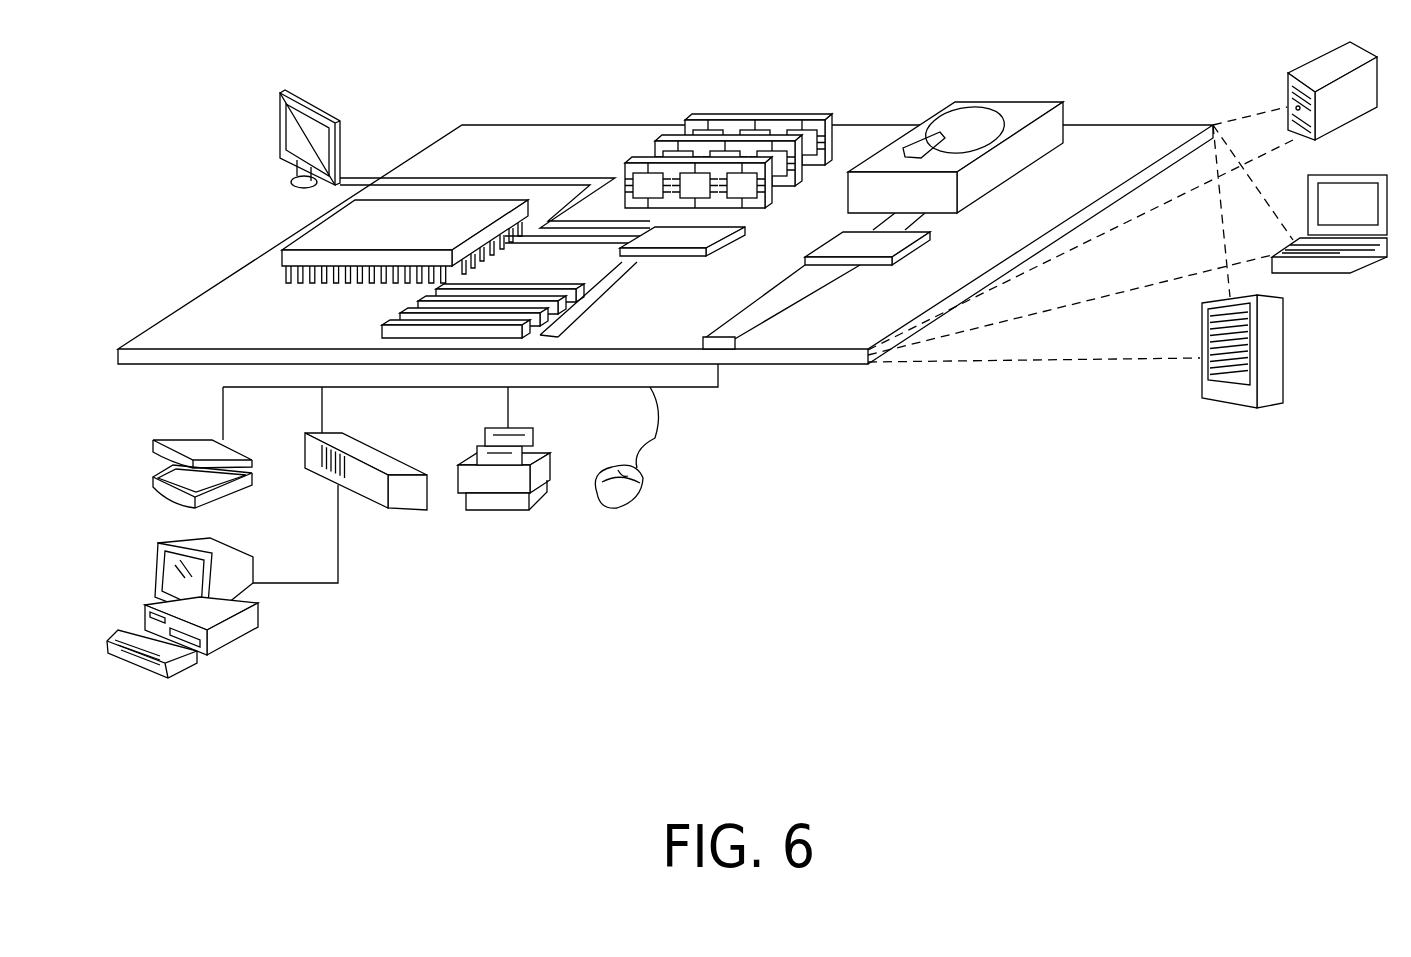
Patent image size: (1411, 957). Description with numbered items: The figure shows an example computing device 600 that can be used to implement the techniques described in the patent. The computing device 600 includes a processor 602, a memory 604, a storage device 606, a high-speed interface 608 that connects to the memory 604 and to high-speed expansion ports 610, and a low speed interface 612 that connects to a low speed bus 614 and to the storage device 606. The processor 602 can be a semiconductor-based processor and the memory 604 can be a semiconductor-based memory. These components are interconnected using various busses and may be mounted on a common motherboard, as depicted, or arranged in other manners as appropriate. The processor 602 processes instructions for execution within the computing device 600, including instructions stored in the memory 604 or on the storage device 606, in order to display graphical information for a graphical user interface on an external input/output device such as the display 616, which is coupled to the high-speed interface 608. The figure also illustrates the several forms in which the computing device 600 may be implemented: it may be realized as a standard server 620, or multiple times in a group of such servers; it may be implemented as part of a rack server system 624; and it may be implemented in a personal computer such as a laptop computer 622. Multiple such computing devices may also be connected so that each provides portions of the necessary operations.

The computing device 600 is at (412, 68).
The processor 602 is at (305, 233).
The memory 604 is at (763, 118).
The storage device 606 is at (998, 102).
The high-speed interface 608 is at (693, 233).
The high-speed expansion ports 610 is at (408, 313).
The low speed interface 612 is at (842, 243).
The low speed bus 614 is at (723, 332).
The display 616 is at (284, 95).
The standard server 620 is at (1310, 70).
The laptop computer 622 is at (1366, 173).
The rack server system 624 is at (1283, 352).